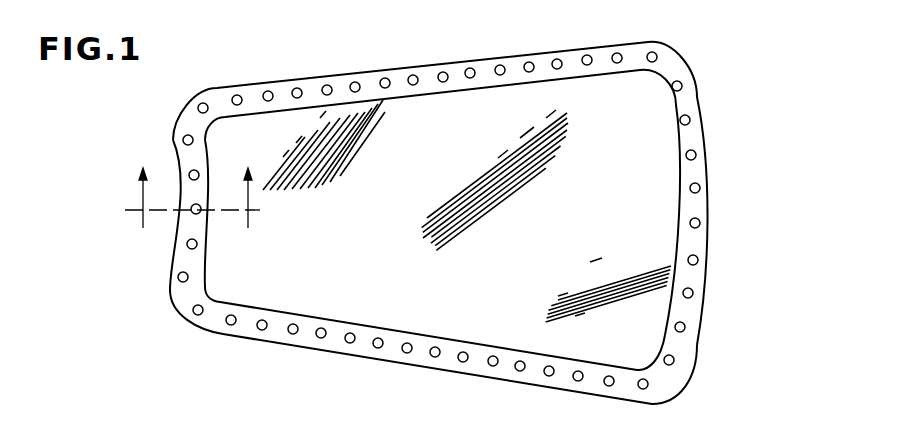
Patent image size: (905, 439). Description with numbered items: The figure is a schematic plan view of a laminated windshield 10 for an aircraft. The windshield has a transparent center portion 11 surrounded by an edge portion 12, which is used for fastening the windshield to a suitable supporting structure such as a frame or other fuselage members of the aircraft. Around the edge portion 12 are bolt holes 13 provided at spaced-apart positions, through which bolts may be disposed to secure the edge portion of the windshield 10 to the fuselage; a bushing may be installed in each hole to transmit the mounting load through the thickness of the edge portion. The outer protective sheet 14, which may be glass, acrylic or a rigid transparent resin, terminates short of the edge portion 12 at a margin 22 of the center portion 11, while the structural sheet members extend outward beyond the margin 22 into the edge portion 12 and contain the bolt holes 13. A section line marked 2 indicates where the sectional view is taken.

The laminated windshield 10 is at (733, 94).
The center portion 11 is at (392, 197).
The edge portion 12 is at (707, 205).
The bolt holes 13 is at (693, 260).
The outer protective sheet 14 is at (637, 358).
The margin 22 is at (677, 310).
The section line 2- 2 is at (192, 216).